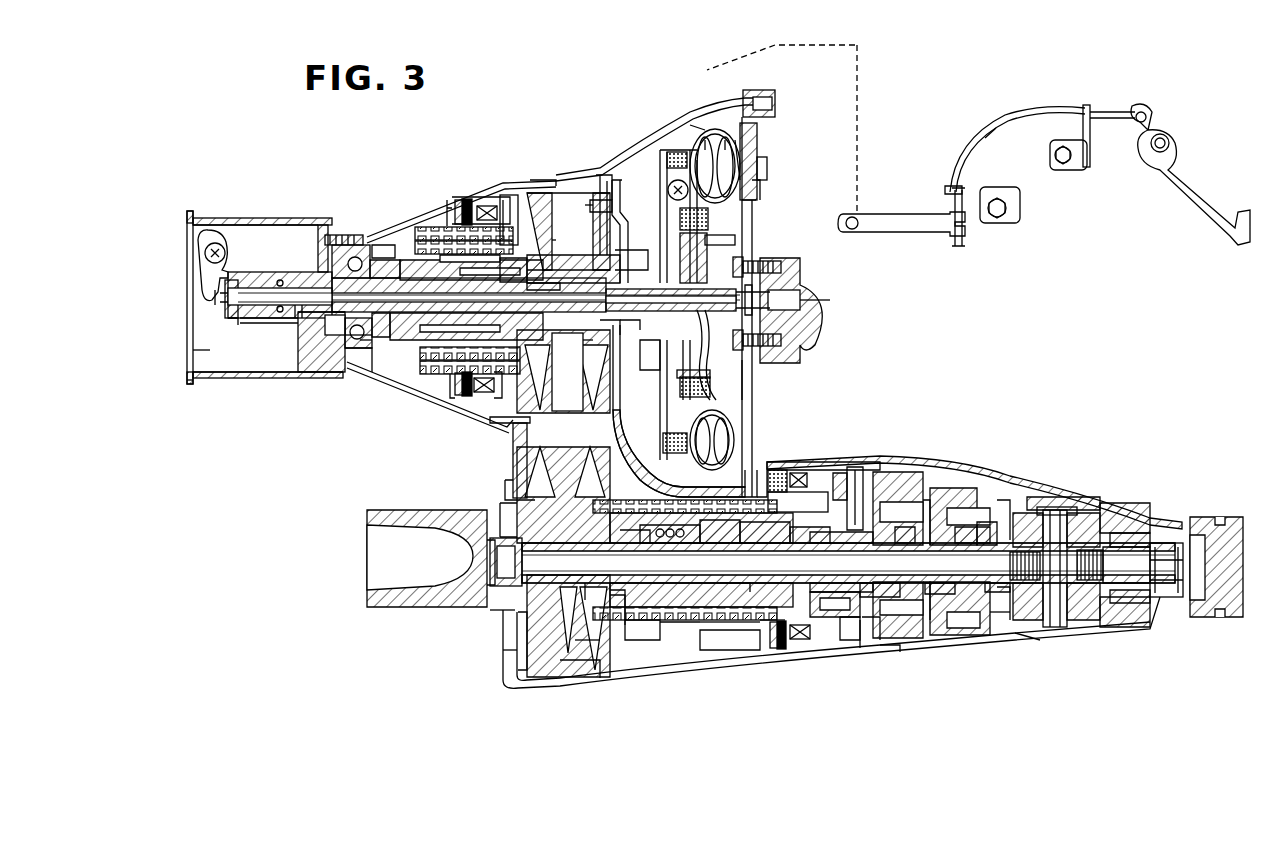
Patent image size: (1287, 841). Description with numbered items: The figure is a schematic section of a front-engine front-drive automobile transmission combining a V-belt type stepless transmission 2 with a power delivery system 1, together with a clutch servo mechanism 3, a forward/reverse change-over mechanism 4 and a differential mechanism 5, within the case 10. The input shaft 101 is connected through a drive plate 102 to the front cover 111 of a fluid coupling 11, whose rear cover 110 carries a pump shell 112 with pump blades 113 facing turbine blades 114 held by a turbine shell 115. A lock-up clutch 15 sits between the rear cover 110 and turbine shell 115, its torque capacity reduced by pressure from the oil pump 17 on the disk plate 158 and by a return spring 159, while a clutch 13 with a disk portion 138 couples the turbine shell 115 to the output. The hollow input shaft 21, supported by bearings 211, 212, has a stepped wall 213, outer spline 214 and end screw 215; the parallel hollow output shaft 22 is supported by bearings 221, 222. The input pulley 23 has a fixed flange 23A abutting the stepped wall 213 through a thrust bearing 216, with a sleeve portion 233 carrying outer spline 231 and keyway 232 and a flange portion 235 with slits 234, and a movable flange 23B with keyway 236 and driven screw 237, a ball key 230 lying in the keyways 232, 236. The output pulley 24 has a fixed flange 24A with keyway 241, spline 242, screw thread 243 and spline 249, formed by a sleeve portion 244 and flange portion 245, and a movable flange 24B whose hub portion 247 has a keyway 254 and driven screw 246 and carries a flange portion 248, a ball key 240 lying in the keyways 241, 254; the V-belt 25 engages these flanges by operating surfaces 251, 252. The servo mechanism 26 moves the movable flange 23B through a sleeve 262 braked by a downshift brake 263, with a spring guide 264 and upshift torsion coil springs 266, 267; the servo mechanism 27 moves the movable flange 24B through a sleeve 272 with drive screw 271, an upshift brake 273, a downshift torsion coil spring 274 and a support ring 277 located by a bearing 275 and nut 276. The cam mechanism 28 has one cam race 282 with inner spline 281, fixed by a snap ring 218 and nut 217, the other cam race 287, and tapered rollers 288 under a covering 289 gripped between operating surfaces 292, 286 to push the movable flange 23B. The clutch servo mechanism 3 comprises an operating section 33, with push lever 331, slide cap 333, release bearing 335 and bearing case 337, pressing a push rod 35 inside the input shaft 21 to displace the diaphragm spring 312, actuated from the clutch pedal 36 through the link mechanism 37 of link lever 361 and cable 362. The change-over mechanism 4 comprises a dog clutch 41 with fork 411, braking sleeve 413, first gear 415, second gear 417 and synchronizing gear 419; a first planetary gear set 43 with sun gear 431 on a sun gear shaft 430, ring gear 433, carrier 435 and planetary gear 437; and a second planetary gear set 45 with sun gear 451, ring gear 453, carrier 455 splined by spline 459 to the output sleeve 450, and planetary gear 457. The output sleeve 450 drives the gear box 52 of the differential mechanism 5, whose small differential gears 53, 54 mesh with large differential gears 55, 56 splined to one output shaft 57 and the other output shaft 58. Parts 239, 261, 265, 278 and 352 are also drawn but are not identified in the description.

The input shaft 1 is at (735, 140).
The housing cover 2 is at (577, 175).
The output member 3 is at (790, 303).
The lower transmission unit 4 is at (897, 665).
The planetary gear set 5 is at (1058, 632).
The main housing flange 10 is at (748, 90).
The drive ring 11 is at (713, 129).
The bolt 13 is at (705, 238).
The bearing column 15 is at (670, 150).
The support plate 17 is at (622, 180).
The bevel gear 21 is at (562, 326).
The clutch hub 22 is at (636, 642).
The stator 23 is at (552, 193).
The stator core 23A is at (600, 212).
The stator winding 23B is at (552, 232).
The lower housing 24 is at (540, 686).
The flange 24A is at (520, 652).
The housing wall 24B is at (568, 678).
The bearing 25 is at (522, 640).
The housing shell 26 is at (460, 200).
The clutch pack 27 is at (740, 622).
The bearing 28 is at (374, 258).
The servo housing 33 is at (230, 242).
The cylinder 35 is at (308, 272).
The pedal lever 36 is at (1190, 178).
The cable 37 is at (1038, 102).
The carrier 41 is at (860, 650).
The carrier plate 43 is at (900, 640).
The sun gear 45 is at (965, 638).
The ring gear 52 is at (1122, 605).
The pinion shaft 53 is at (1060, 507).
The pinion 54 is at (1090, 623).
The end bearing 55 is at (1135, 600).
The thrust washer 56 is at (1038, 627).
The output flange 57 is at (1172, 566).
The snap ring 58 is at (1022, 643).
The coupling 101 is at (798, 270).
The spacer 102 is at (755, 212).
The seal 110 is at (667, 152).
The flange 111 is at (758, 186).
The flange 112 is at (758, 137).
The ring segment 113 is at (725, 157).
The ring segment 114 is at (705, 157).
The pin 115 is at (692, 125).
The bolt 138 is at (758, 261).
The seal 158 is at (662, 438).
The bearing 159 is at (655, 345).
The gear tooth 211 is at (625, 328).
The housing wall 212 is at (314, 378).
The gear hub 213 is at (605, 330).
The bearing seat 214 is at (355, 358).
The piston 215 is at (236, 326).
The bearing 216 is at (590, 366).
The rod 217 is at (270, 325).
The retainer 218 is at (368, 350).
The coil 221 is at (780, 650).
The coupling 222 is at (500, 614).
The coil 230 is at (466, 200).
The sleeve 231 is at (408, 258).
The bracket 232 is at (452, 200).
The spacer 233 is at (535, 255).
The ring 234 is at (596, 200).
The ring 235 is at (596, 175).
The frame 236 is at (508, 195).
The core 237 is at (487, 206).
The spacer 239 is at (540, 180).
The ball bearing 240 is at (675, 543).
The sleeve 241 is at (718, 543).
The sleeve 242 is at (778, 542).
The sleeve 243 is at (812, 543).
The shaft 244 is at (598, 582).
The bearing 245 is at (520, 632).
The plate 246 is at (615, 678).
The plate 247 is at (594, 678).
The wall 248 is at (585, 650).
The ring 249 is at (845, 642).
The shaft end 251 is at (566, 582).
The housing bottom 252 is at (510, 682).
The bearing 254 is at (632, 540).
The frame 261 is at (497, 398).
The core 262 is at (482, 393).
The strut 263 is at (512, 440).
The clutch plates 264 is at (440, 375).
The hub 265 is at (410, 342).
The coil 266 is at (460, 396).
The frame 267 is at (448, 400).
The plate 271 is at (665, 624).
The plate 272 is at (705, 624).
The plate 273 is at (770, 622).
The plate 274 is at (730, 652).
The shaft 275 is at (740, 582).
The core 276 is at (800, 640).
The plate 277 is at (735, 624).
The spacer 278 is at (514, 258).
The wall 281 is at (296, 372).
The bearing 282 is at (350, 245).
The clutch plates 286 is at (425, 228).
The bearing 287 is at (356, 350).
The sleeve 288 is at (385, 250).
The ring 289 is at (382, 244).
The bolt 292 is at (344, 235).
The wall 312 is at (752, 376).
The lever 331 is at (216, 243).
The wall 333 is at (215, 352).
The piston 335 is at (240, 280).
The plate 337 is at (211, 383).
The bore 352 is at (272, 290).
The link rod 361 is at (914, 232).
The cable tube 362 is at (968, 160).
The hub 411 is at (845, 473).
The plate 413 is at (866, 500).
The sleeve 415 is at (842, 543).
The upper housing 417 is at (895, 458).
The coil 419 is at (818, 470).
The hub 430 is at (835, 618).
The sleeve 431 is at (870, 582).
The plate 433 is at (912, 620).
The ring 435 is at (870, 640).
The sleeve 437 is at (905, 543).
The sleeve 450 is at (995, 582).
The sleeve 451 is at (965, 543).
The ring 453 is at (992, 638).
The ring 455 is at (1005, 622).
The bearing 457 is at (985, 510).
The sleeve 459 is at (935, 582).